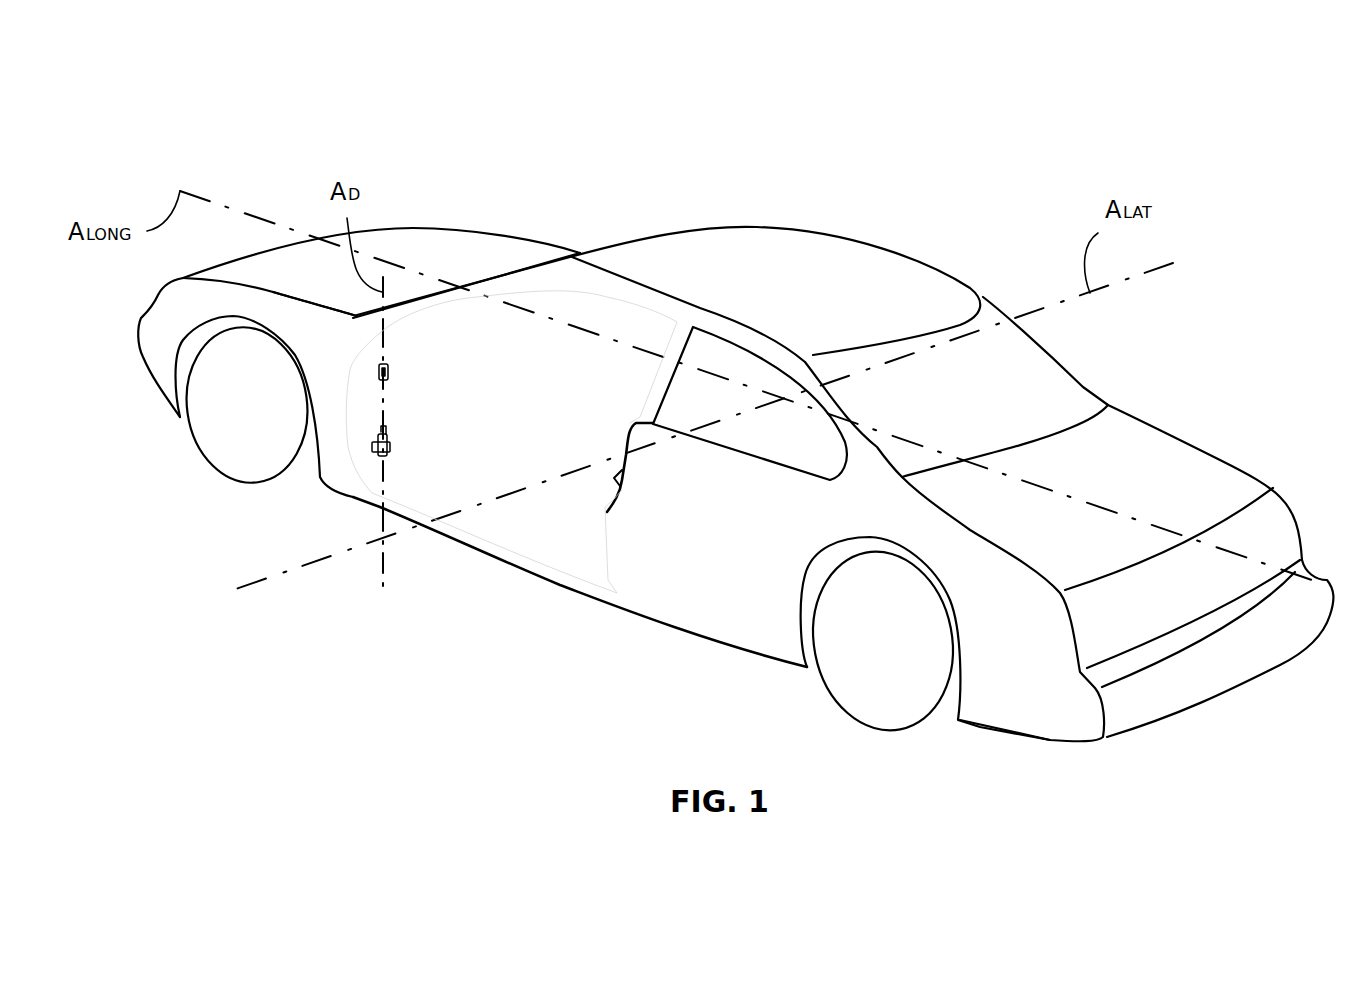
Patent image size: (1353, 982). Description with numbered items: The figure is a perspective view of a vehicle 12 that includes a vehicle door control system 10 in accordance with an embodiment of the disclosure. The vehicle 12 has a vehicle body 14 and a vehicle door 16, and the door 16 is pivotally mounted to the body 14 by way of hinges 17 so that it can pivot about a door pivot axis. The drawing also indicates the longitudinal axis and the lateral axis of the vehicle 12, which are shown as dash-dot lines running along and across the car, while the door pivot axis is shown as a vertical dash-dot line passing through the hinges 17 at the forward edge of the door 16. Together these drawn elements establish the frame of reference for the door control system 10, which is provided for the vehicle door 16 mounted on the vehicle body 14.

The vehicle door control system 10 is at (377, 448).
The vehicle 12 is at (781, 200).
The vehicle body 14 is at (325, 330).
The vehicle door 16 is at (473, 303).
The hinges 17 is at (378, 375).